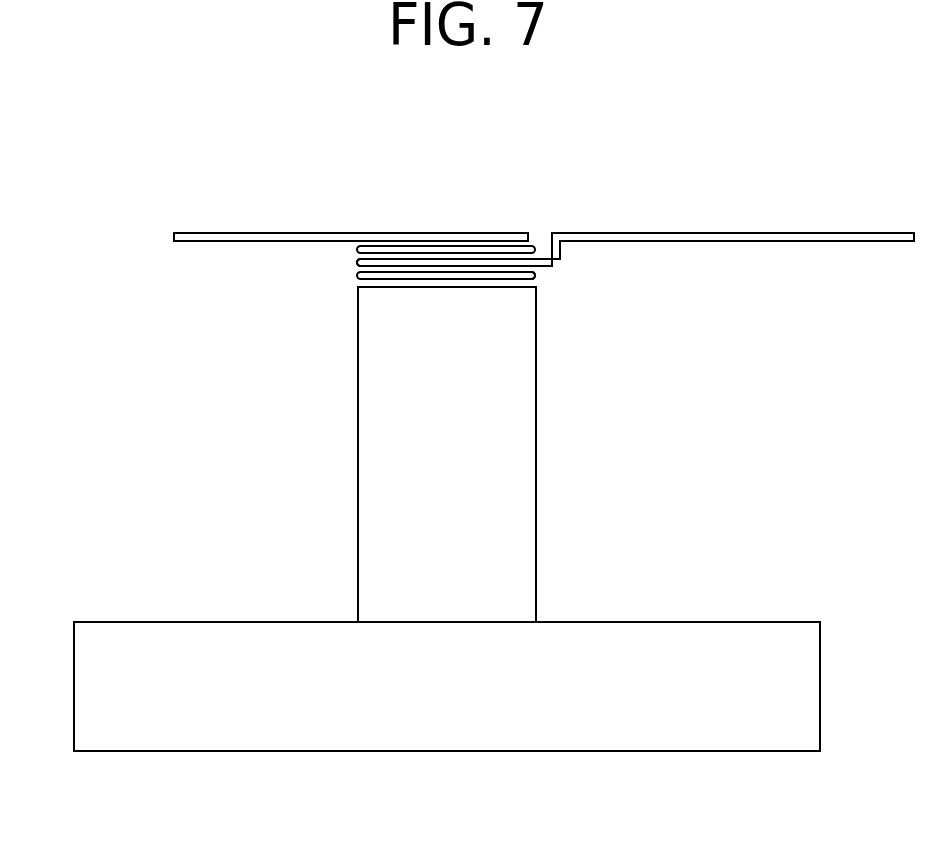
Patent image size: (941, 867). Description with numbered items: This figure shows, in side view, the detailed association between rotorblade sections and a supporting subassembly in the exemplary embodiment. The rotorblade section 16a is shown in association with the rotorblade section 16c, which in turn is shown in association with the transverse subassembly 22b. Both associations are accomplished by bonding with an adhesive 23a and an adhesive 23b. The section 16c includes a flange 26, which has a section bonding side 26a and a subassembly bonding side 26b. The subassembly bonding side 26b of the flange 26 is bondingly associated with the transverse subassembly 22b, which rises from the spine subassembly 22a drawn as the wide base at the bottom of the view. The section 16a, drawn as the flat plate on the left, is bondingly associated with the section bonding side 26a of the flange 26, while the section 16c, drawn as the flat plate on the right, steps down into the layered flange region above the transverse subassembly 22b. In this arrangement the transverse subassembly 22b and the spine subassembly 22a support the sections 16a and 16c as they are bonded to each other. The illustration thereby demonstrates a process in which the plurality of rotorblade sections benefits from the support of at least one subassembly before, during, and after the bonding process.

The rotorblade section 16a is at (282, 233).
The rotorblade section 16c is at (733, 233).
The adhesive 23a is at (536, 279).
The adhesive 23b is at (545, 240).
The flange 26 is at (462, 264).
The section bonding side 26a is at (408, 262).
The subassembly bonding side 26b is at (357, 267).
The spine subassembly 22a is at (307, 752).
The transverse subassembly 22b is at (536, 472).